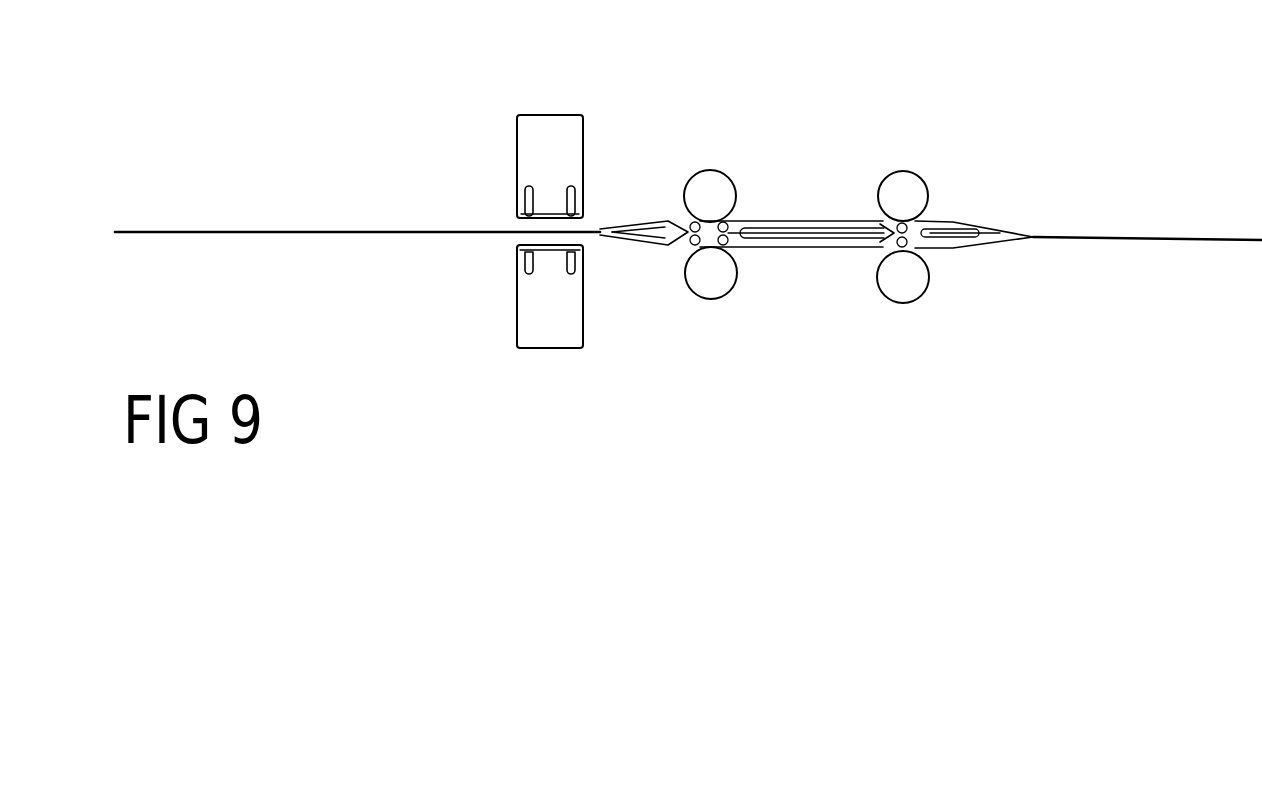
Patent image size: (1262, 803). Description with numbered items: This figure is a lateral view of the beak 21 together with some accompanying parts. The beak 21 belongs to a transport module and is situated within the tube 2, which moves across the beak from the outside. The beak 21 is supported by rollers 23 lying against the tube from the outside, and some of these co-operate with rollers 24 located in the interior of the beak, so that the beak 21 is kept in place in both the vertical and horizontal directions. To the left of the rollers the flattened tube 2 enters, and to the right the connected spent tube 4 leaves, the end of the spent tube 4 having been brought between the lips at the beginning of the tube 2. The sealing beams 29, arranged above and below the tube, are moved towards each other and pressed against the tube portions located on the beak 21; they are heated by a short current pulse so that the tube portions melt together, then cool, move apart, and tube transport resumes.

The tube 2 is at (290, 228).
The spent tube 4 is at (1047, 232).
The beak 21 is at (818, 225).
The rollers 23 is at (703, 188).
The rollers 24 is at (735, 222).
The sealing beams 29 is at (537, 167).